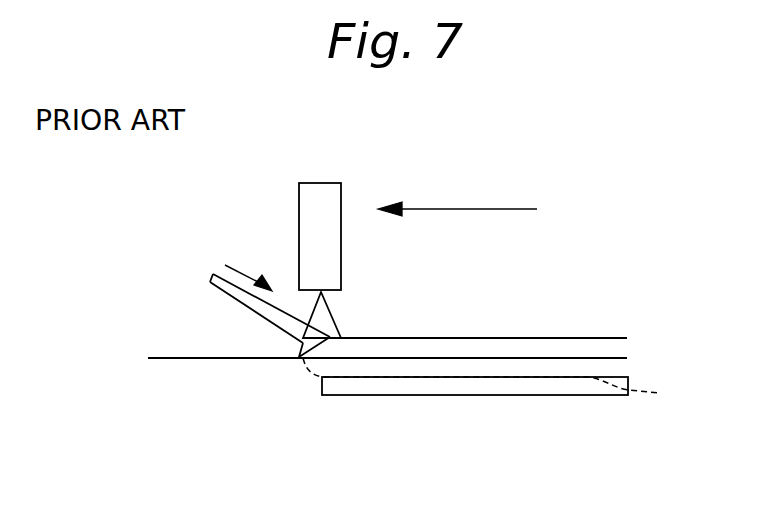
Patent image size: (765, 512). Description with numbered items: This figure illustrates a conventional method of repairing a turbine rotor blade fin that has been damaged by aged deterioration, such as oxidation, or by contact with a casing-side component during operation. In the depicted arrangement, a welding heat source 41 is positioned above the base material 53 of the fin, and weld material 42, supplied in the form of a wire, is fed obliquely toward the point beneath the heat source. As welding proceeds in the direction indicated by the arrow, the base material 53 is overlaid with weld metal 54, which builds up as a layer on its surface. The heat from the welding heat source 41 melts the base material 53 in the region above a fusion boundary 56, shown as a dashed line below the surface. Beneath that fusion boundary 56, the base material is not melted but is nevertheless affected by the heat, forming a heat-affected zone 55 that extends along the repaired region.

The welding heat source 41 is at (322, 194).
The weld material 42 is at (212, 275).
The base material 53 is at (182, 378).
The weld metal 54 is at (523, 345).
The heat-affected zone 55 is at (563, 390).
The fusion boundary 56 is at (499, 391).